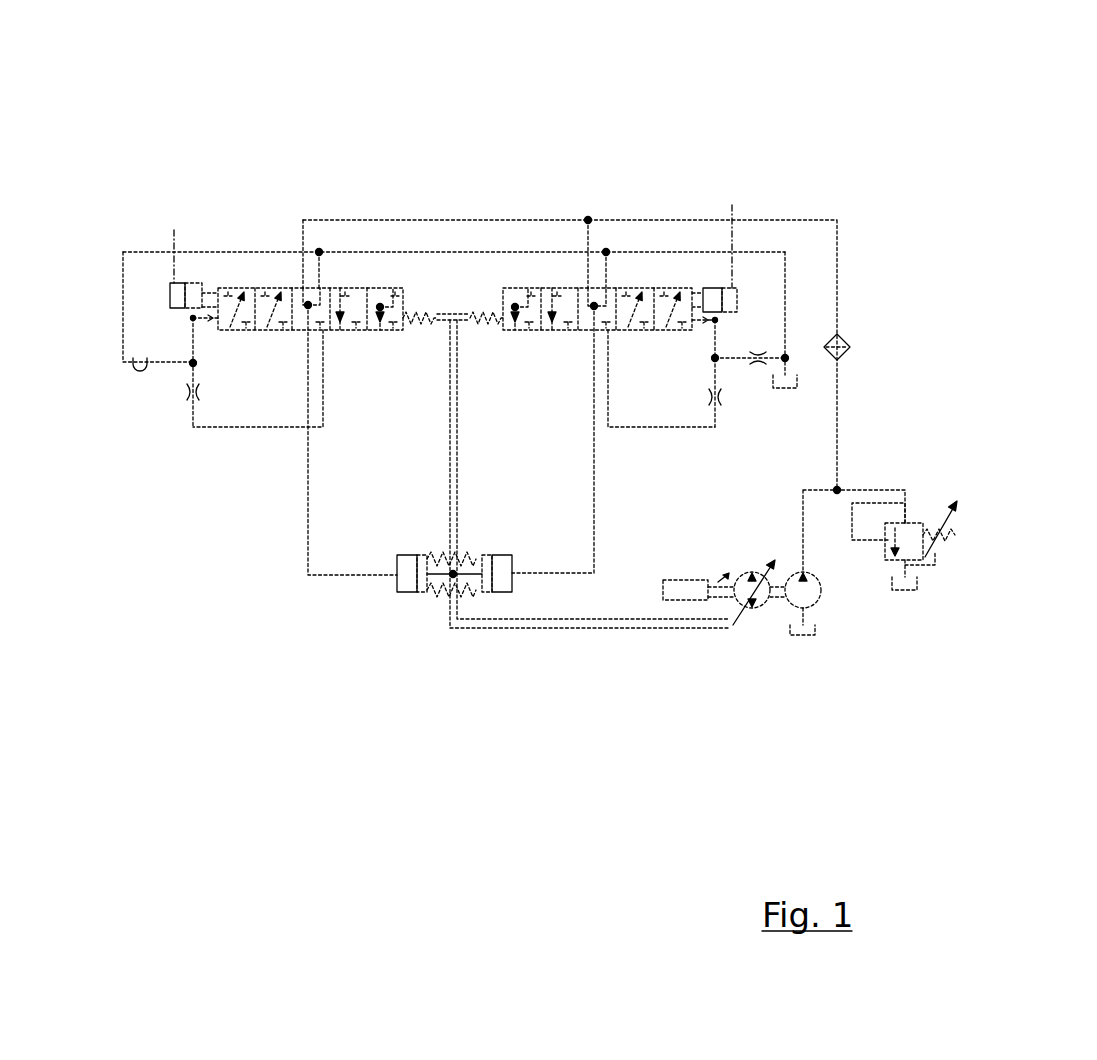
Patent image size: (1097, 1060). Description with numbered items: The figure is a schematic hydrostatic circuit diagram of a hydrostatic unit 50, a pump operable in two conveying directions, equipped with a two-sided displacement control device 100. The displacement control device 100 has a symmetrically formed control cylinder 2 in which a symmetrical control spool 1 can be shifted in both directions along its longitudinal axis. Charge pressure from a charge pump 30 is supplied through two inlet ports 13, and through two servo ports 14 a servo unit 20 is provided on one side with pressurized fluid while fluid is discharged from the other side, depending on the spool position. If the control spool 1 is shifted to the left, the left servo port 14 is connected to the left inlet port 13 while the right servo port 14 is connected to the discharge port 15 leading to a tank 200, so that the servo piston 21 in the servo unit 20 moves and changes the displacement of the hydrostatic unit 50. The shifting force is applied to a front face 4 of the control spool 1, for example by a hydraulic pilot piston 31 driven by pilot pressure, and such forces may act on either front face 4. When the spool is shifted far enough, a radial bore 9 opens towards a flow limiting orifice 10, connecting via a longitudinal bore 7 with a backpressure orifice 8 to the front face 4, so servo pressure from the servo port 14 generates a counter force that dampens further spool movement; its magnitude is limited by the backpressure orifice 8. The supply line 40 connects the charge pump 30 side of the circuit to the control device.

The displacement control device 100 is at (514, 252).
The control spool 1 is at (455, 217).
The control cylinder 2 is at (463, 247).
The hydraulic pilot piston 31 is at (518, 241).
The front face 4 is at (446, 258).
The inlet port 13 is at (396, 214).
The discharge port 15 is at (489, 222).
The servo port 14 is at (421, 440).
The radial bore 9 is at (454, 424).
The longitudinal bore 7 is at (497, 363).
The flow limiting orifice 10 is at (526, 444).
The backpressure orifice 8 is at (495, 340).
The tank 200 is at (862, 500).
The supply line 40 is at (556, 474).
The servo unit 20 is at (407, 618).
The servo piston 21 is at (481, 642).
The charge pump 30 is at (845, 574).
The hydrostatic unit 50 is at (724, 638).